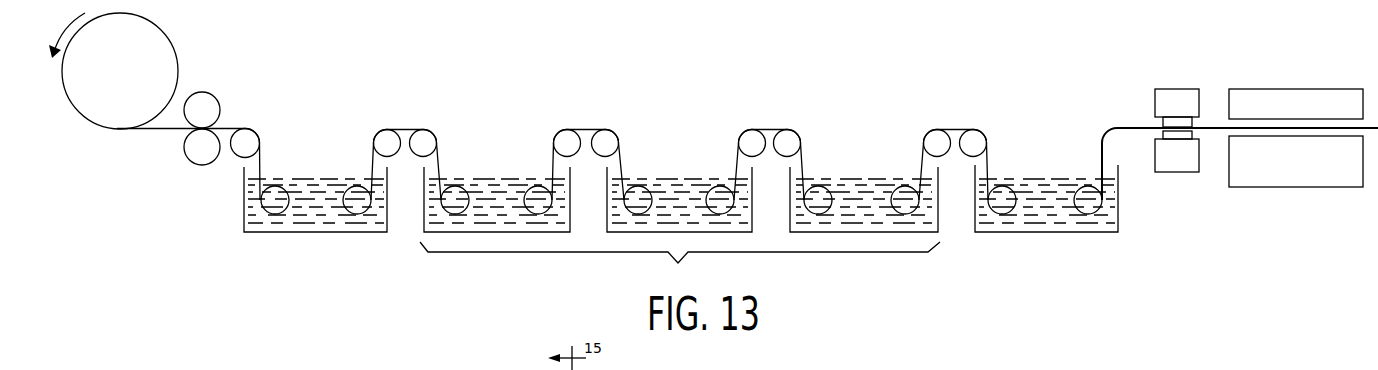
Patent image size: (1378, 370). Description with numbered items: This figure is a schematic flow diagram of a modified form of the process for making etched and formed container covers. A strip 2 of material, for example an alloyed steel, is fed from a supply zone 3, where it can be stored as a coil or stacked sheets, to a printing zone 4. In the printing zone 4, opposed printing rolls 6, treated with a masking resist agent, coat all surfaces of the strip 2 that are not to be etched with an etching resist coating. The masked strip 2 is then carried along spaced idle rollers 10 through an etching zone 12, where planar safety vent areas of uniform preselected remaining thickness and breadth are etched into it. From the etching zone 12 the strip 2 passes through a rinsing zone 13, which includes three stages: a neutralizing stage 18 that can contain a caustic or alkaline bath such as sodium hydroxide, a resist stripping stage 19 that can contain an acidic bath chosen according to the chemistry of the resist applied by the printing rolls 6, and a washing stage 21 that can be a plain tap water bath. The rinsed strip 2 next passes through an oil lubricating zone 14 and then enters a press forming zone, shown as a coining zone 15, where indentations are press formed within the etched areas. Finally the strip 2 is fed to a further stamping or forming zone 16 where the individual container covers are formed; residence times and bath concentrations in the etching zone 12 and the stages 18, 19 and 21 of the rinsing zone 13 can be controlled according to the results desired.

The strip 2 is at (261, 160).
The supply zone 3 is at (69, 121).
The printing zone 4 is at (171, 128).
The printing rolls 6 is at (198, 103).
The idle rollers 10 is at (389, 142).
The etching zone 12 is at (334, 236).
The rinsing zone 13 is at (680, 266).
The lubricating zone 14 is at (1046, 239).
The coining zone 15 is at (1165, 89).
The forming zone 16 is at (1308, 187).
The neutralizing stage 18 is at (517, 235).
The resist stripping stage 19 is at (758, 213).
The washing stage 21 is at (877, 235).